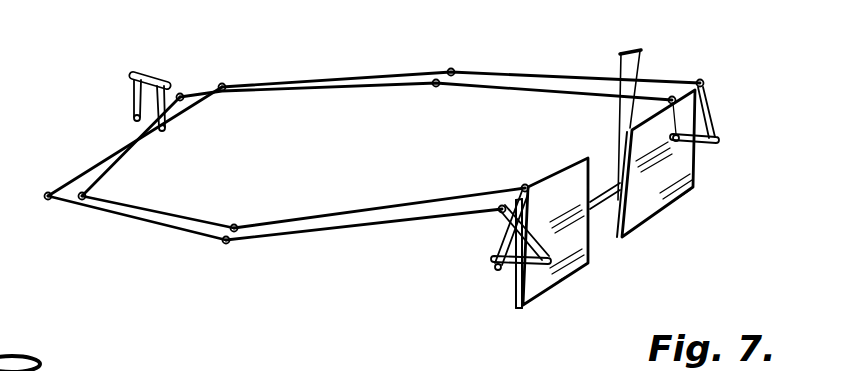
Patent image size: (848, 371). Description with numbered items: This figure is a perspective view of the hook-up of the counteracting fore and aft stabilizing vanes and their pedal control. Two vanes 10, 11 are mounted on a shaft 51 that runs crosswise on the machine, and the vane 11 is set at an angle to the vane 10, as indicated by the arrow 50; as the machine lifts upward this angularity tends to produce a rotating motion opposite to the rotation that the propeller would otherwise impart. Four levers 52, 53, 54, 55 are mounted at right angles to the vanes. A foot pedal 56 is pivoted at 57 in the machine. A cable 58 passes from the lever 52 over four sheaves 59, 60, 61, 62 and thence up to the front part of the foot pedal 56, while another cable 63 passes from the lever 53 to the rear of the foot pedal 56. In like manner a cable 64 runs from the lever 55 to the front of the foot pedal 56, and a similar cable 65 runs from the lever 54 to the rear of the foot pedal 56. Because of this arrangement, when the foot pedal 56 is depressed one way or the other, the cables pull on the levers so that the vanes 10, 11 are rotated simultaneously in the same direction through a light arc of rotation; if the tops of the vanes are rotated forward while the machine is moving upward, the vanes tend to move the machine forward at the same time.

The vane 10 is at (558, 278).
The vane 11 is at (662, 207).
The arrow 50 is at (631, 50).
The shaft 51 is at (603, 210).
The lever 52 is at (485, 281).
The lever 53 is at (528, 310).
The lever 54 is at (715, 139).
The lever 55 is at (703, 121).
The foot pedal 56 is at (150, 77).
The pivot 57 is at (135, 94).
The cable 58 is at (367, 226).
The sheave 59 is at (499, 213).
The sheave 60 is at (223, 243).
The sheave 61 is at (44, 200).
The sheave 62 is at (138, 121).
The cable 63 is at (466, 178).
The cable 64 is at (541, 91).
The cable 65 is at (548, 77).